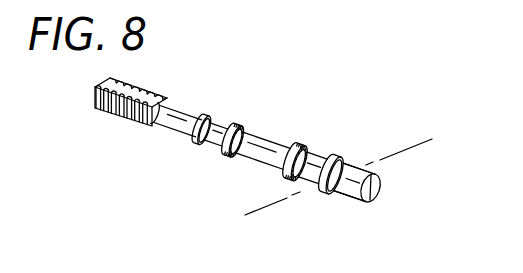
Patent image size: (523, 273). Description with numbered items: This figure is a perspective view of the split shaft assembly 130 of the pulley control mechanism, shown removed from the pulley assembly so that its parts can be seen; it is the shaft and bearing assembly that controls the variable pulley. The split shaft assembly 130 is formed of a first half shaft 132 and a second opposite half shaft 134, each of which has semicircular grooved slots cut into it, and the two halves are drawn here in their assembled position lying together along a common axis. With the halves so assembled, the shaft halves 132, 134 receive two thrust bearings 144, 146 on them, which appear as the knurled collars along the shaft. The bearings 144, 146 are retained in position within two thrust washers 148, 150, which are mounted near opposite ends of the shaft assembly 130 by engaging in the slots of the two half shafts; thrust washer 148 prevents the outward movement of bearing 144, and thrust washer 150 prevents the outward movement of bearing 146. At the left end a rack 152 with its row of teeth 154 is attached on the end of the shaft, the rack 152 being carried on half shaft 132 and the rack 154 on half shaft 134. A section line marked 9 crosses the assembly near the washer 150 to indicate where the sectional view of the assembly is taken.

The section line 9- 9 is at (265, 213).
The split shaft assembly 130 is at (407, 170).
The first half shaft 132 is at (382, 189).
The second opposite half shaft 134 is at (352, 204).
The thrust bearing 144 is at (229, 153).
The thrust bearing 146 is at (302, 144).
The thrust washer 148 is at (206, 113).
The thrust washer 150 is at (337, 156).
The rack 152 is at (166, 74).
The rack 154 is at (114, 123).